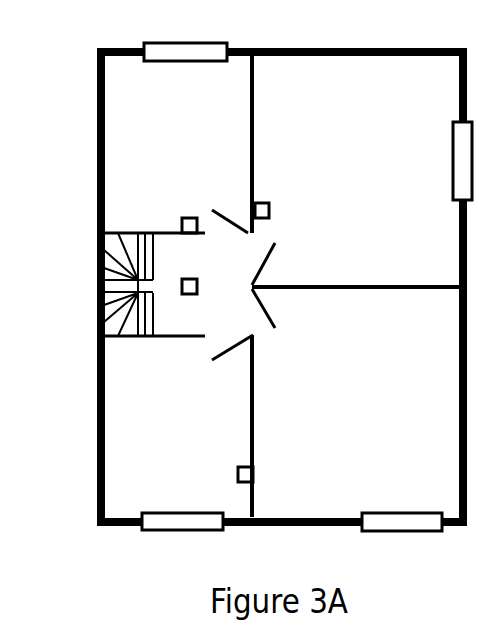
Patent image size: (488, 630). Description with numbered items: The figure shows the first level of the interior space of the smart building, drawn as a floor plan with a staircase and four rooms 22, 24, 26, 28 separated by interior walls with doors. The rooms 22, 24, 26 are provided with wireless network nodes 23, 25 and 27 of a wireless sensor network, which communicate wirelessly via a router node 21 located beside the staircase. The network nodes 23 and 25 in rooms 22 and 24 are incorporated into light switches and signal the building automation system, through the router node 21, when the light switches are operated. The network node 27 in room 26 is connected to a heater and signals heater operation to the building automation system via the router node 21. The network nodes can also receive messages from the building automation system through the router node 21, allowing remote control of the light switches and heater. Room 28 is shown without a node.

The router node 21 is at (178, 272).
The room 22 is at (195, 160).
The network node 23 is at (188, 212).
The room 24 is at (372, 188).
The network node 25 is at (271, 197).
The room 26 is at (197, 441).
The network node 27 is at (233, 473).
The room 28 is at (378, 418).